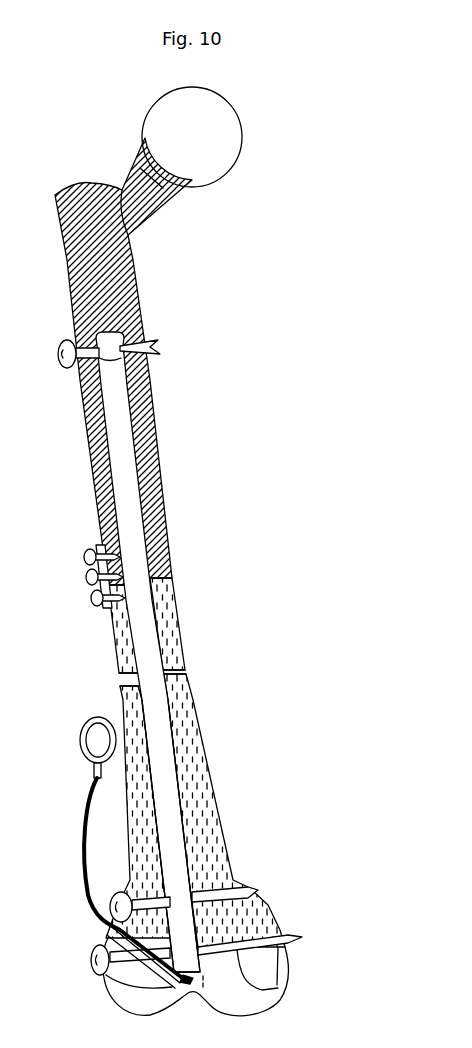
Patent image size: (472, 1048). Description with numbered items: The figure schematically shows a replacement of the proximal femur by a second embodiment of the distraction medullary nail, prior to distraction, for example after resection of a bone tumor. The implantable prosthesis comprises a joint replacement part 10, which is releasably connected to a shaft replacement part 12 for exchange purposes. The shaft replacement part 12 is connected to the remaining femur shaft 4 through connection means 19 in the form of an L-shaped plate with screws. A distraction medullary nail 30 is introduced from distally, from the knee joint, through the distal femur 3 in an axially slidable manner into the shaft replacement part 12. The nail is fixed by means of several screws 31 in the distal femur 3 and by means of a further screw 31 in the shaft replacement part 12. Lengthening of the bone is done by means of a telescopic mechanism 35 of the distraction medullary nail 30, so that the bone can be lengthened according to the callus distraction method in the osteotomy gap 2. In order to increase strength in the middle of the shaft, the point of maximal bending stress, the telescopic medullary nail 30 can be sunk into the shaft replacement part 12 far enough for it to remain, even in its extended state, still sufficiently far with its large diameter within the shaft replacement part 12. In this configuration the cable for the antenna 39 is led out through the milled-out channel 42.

The joint replacement part 10 is at (105, 285).
The shaft replacement part 12 is at (135, 492).
The telescopic mechanism 35 is at (140, 338).
The screws 31 is at (148, 349).
The plate 19 is at (88, 571).
The remaining femur shaft 4 is at (167, 610).
The osteotomy gap 2 is at (177, 673).
The distraction medullary nail 30 is at (165, 757).
The distal femur 3 is at (205, 832).
The antenna 39 is at (100, 742).
The milled-out channel 42 is at (195, 983).